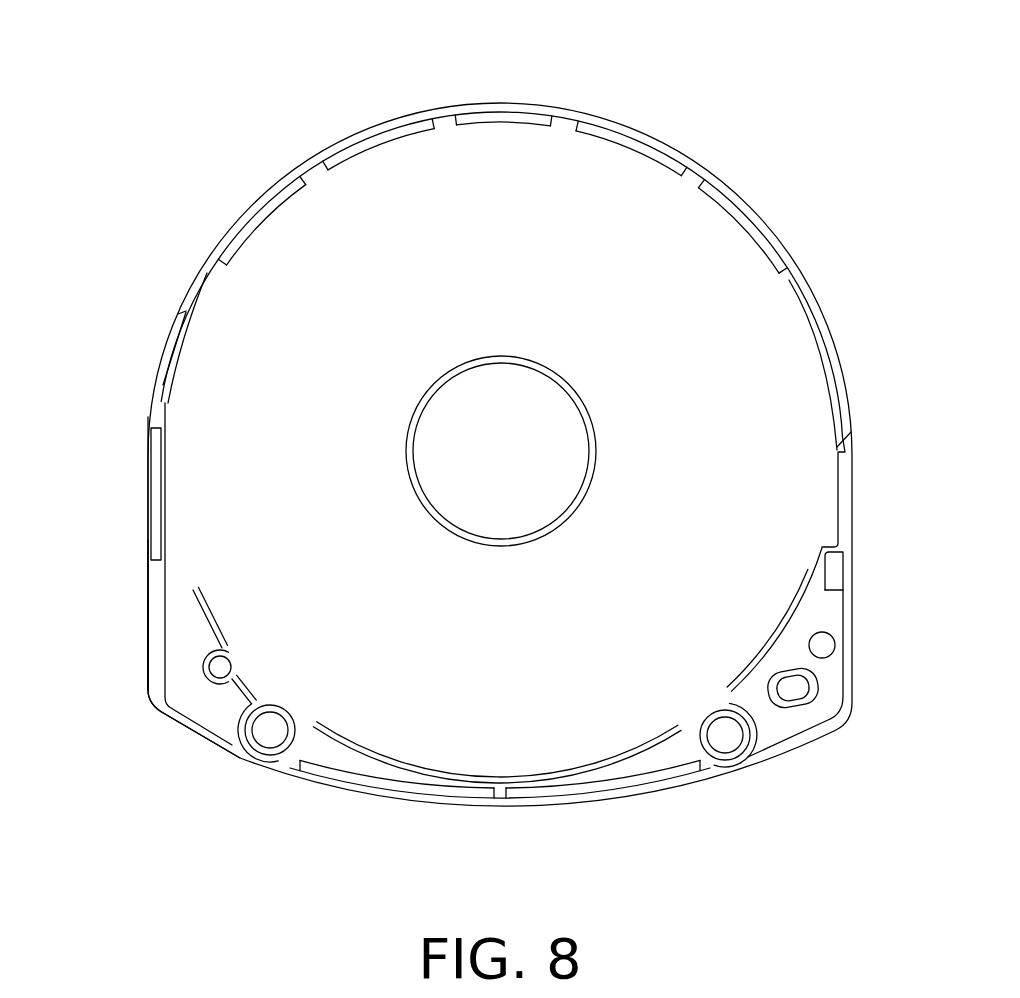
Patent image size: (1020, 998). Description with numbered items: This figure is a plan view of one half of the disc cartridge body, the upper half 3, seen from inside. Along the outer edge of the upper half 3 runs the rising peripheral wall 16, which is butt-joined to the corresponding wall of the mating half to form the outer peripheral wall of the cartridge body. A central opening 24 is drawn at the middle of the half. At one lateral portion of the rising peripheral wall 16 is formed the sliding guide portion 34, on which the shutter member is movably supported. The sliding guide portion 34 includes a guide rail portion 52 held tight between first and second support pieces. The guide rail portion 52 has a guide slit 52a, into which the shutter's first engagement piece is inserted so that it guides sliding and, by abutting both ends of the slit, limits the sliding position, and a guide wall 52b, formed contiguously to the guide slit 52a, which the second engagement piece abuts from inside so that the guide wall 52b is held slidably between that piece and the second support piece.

The upper half 3 is at (848, 448).
The rising peripheral wall 16 is at (437, 113).
The center opening 24 is at (588, 483).
The guide rail portion 52 is at (148, 508).
The guide slit 52a is at (150, 521).
The sliding guide portion 34 is at (143, 552).
The guide wall 52b is at (148, 592).